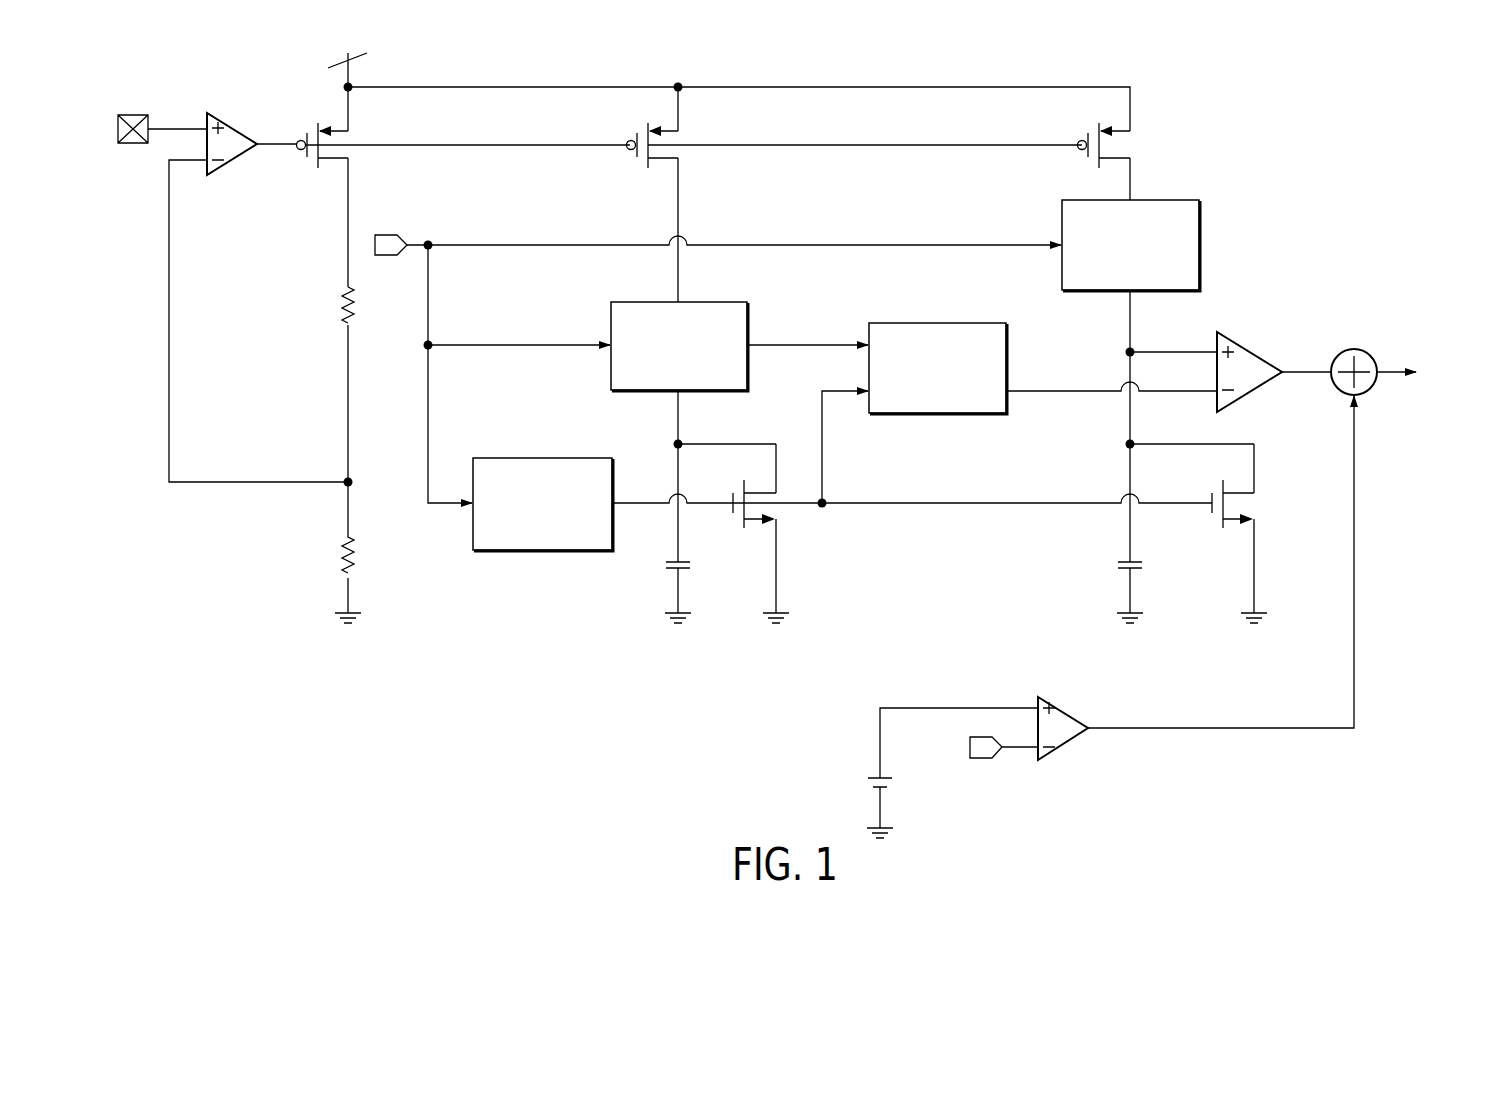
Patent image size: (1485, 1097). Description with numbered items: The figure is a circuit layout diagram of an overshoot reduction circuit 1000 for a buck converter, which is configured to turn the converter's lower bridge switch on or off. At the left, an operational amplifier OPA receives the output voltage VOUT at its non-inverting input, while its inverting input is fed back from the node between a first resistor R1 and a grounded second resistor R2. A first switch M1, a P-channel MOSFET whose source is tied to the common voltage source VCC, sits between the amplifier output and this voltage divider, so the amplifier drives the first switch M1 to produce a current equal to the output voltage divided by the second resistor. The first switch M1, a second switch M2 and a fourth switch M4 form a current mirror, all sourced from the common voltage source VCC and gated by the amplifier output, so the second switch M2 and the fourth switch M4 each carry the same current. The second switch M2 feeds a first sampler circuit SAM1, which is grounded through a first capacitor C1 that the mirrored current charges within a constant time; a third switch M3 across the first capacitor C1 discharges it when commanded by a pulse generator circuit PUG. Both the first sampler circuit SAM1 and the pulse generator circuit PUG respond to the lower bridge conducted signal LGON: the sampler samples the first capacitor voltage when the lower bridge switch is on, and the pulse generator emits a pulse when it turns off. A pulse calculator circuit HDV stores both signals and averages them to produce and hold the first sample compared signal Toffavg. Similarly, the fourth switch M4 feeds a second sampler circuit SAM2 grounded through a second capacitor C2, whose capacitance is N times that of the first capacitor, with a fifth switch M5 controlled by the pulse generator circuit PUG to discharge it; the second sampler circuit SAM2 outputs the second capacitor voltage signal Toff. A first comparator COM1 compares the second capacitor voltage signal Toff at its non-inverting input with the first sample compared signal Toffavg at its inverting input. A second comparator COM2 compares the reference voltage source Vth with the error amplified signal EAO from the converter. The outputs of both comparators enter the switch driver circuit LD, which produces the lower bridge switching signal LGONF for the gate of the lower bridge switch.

The overshoot reduction circuit 1000 is at (1304, 47).
The common voltage source VCC is at (725, 78).
The output voltage VOUT is at (154, 112).
The operational amplifier OPA is at (231, 168).
The first switch M1 is at (451, 187).
The second switch M2 is at (843, 202).
The fourth switch M4 is at (1092, 151).
The first resistor R1 is at (328, 387).
The second resistor R2 is at (332, 552).
The lower bridge conducted signal LGON is at (708, 351).
The first sampler circuit SAM1 is at (611, 373).
The second sampler circuit SAM2 is at (1200, 248).
The pulse generator circuit PUG is at (542, 551).
The third switch M3 is at (732, 532).
The first capacitor C1 is at (663, 533).
The pulse calculator circuit HDV is at (937, 414).
The first sample compared signal Toffavg is at (1111, 375).
The second capacitor voltage signal Toff is at (1172, 340).
The first comparator COM1 is at (1250, 350).
The switch driver circuit LD is at (1335, 387).
The lower bridge switching signal LGONF is at (1422, 356).
The fifth switch M5 is at (1044, 532).
The second capacitor C2 is at (1114, 487).
The second comparator COM2 is at (1086, 688).
The reference voltage source Vth is at (932, 773).
The error amplified signal EAO is at (994, 767).